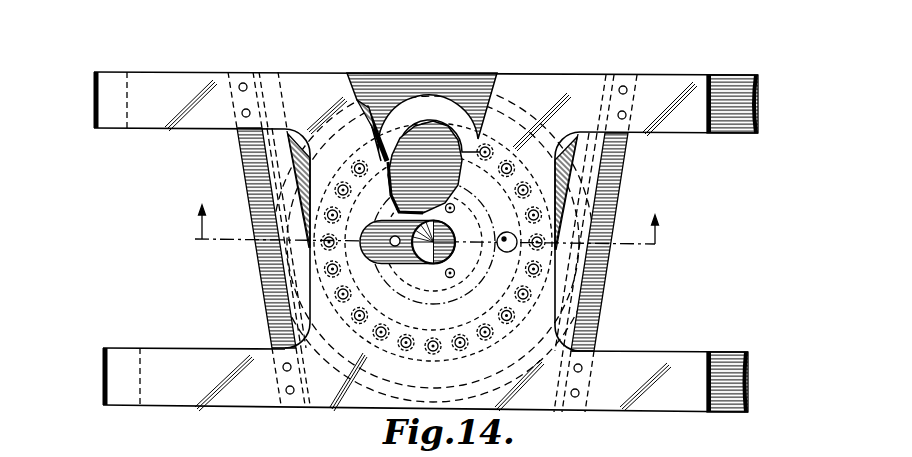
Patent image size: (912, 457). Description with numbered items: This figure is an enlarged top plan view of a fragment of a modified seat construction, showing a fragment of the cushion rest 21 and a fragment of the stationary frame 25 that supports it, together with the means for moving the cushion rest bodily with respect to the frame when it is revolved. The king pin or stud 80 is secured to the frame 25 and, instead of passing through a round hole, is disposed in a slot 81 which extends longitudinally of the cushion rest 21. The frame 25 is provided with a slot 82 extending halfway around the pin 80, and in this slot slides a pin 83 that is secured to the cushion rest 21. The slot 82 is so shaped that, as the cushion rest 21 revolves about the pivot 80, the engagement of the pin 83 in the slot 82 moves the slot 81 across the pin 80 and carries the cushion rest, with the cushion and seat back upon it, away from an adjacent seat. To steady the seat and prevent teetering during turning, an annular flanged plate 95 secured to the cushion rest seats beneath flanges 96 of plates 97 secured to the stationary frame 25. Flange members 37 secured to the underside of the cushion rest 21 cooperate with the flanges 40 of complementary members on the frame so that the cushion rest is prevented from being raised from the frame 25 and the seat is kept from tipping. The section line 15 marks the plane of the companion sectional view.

The cushion rest 21 is at (212, 120).
The frame 25 is at (407, 84).
The slot 82 is at (436, 108).
The annular flanged plate 95 is at (370, 105).
The flanges 96 is at (274, 288).
The plates 97 is at (287, 185).
The section line 15- 15 is at (427, 241).
The slot 81 is at (380, 258).
The king pin 80 is at (433, 263).
The pin 83 is at (508, 251).
The flange members 37 is at (493, 359).
The flanges 40 is at (430, 349).